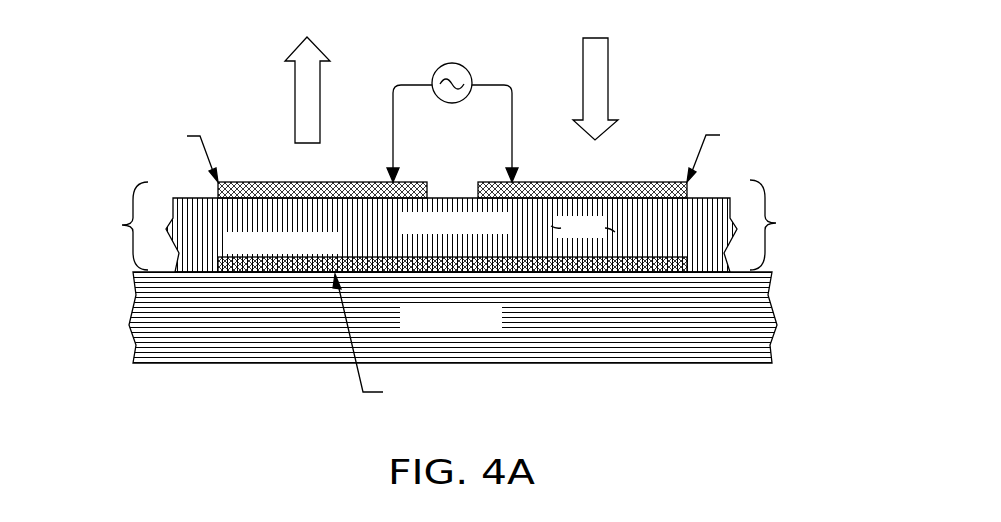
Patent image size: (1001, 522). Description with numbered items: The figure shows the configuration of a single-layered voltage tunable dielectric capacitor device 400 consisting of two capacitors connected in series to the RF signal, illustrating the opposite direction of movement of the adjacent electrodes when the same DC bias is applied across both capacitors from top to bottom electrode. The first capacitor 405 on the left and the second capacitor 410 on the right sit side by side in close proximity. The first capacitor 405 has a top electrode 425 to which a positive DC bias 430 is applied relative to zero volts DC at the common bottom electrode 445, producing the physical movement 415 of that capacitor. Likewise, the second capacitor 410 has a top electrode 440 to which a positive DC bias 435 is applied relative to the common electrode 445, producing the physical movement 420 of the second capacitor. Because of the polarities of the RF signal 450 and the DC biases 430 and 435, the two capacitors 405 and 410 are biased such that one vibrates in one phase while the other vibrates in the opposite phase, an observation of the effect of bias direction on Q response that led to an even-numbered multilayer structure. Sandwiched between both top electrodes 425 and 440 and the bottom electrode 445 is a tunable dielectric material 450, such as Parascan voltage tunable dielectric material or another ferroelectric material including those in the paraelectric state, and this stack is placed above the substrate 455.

The varactor device 400 is at (452, 223).
The capacitor 1 405 is at (121, 225).
The capacitor 2 410 is at (777, 223).
The physical movement 415 is at (305, 35).
The physical movement 420 is at (597, 37).
The top electrode 425 is at (218, 196).
The DC=+volts 430 is at (250, 155).
The DC=+volts 435 is at (653, 157).
The top electrode 440 is at (687, 197).
The common bottom electrode 445 is at (286, 273).
The RF signal / tunable dielectric material 450 is at (443, 65).
The substrate 455 is at (290, 364).